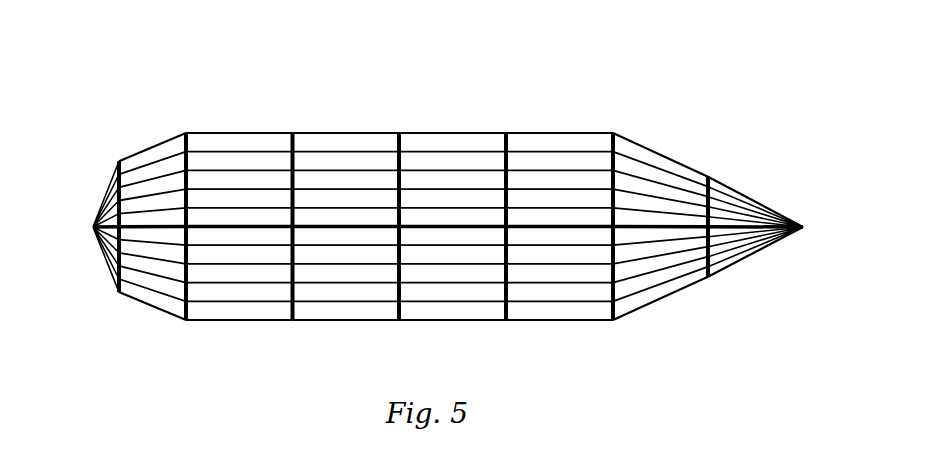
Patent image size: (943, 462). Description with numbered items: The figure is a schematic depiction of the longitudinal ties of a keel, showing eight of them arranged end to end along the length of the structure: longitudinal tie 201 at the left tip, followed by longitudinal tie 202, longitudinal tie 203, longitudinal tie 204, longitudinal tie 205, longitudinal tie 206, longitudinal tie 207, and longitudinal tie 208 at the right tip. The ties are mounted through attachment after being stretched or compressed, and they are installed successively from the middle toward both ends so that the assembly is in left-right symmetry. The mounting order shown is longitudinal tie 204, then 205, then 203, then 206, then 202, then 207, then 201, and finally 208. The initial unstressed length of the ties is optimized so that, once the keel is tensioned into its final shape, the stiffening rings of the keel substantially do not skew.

The longitudinal tie 201 is at (97, 192).
The longitudinal tie 202 is at (152, 138).
The longitudinal tie 203 is at (255, 128).
The longitudinal tie 204 is at (352, 129).
The longitudinal tie 205 is at (454, 129).
The longitudinal tie 206 is at (554, 128).
The longitudinal tie 207 is at (642, 140).
The longitudinal tie 208 is at (725, 178).